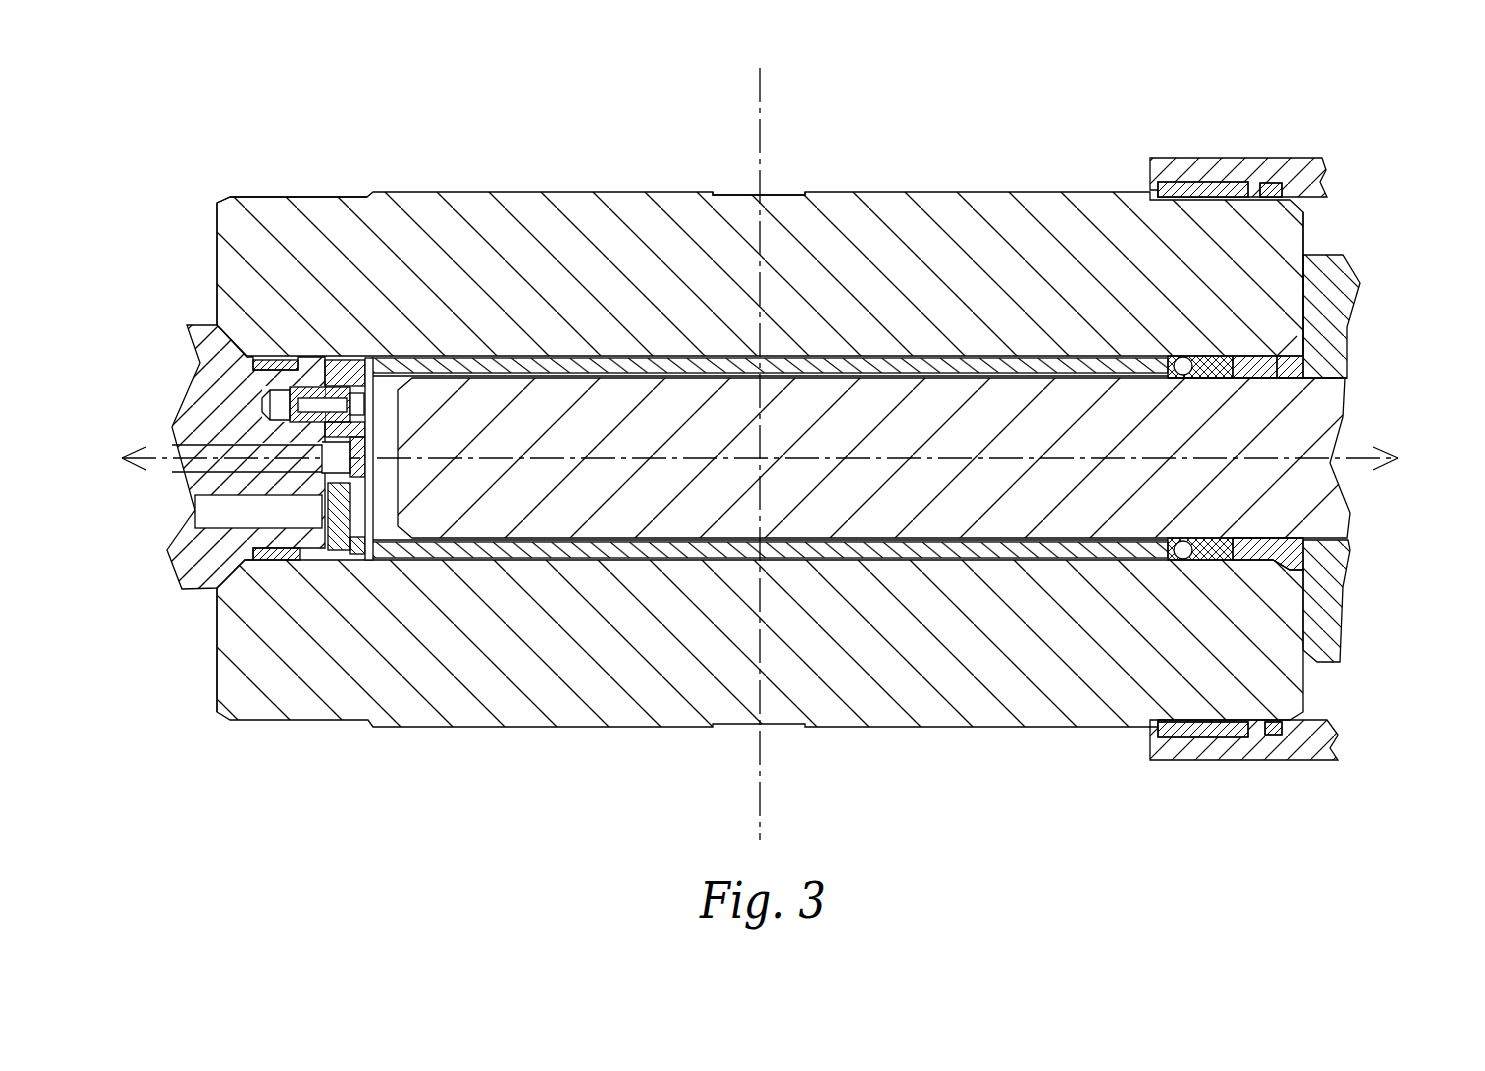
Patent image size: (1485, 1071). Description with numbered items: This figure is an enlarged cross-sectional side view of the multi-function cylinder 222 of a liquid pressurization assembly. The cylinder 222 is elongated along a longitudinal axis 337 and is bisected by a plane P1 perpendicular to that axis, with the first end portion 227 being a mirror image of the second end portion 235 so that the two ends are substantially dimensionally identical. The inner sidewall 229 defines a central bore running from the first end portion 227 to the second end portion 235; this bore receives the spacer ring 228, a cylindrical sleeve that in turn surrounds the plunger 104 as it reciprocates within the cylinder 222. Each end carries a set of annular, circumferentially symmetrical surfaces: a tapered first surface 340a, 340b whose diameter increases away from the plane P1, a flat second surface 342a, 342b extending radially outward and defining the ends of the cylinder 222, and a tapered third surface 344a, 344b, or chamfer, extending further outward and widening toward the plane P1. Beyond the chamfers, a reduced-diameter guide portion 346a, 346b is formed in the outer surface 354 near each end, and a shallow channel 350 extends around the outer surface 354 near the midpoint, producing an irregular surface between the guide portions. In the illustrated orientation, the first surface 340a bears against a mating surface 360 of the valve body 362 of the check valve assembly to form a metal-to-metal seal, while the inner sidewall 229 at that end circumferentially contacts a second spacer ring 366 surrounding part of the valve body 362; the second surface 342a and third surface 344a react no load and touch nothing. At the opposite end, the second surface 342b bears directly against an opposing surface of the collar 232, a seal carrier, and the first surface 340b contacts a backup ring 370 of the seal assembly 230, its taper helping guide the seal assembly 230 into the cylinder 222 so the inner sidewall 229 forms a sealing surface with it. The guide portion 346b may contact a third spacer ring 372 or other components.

The plunger 104 is at (520, 490).
The multi-function cylinder 222 is at (918, 650).
The first end portion 227 is at (240, 648).
The spacer ring 228 is at (933, 365).
The inner sidewall 229 is at (340, 362).
The seal assembly 230 is at (1210, 565).
The collar 232 is at (1333, 303).
The second end portion 235 is at (1287, 640).
The longitudinal axis 337 is at (1357, 459).
The first surface 340a is at (255, 358).
The first surface 340b is at (1333, 342).
The second surface 342a is at (217, 250).
The second surface 342b is at (1306, 226).
The third surface 344a is at (217, 201).
The third surface 344b is at (1330, 183).
The guide portion 346a is at (262, 197).
The guide portion 346b is at (1240, 183).
The channel 350 is at (790, 193).
The outer surface 354 is at (565, 190).
The mating surface 360 is at (240, 340).
The valve body 362 is at (195, 553).
The second spacer ring 366 is at (283, 561).
The backup ring 370 is at (1283, 388).
The third spacer ring 372 is at (1210, 182).
The plane P1 is at (765, 105).